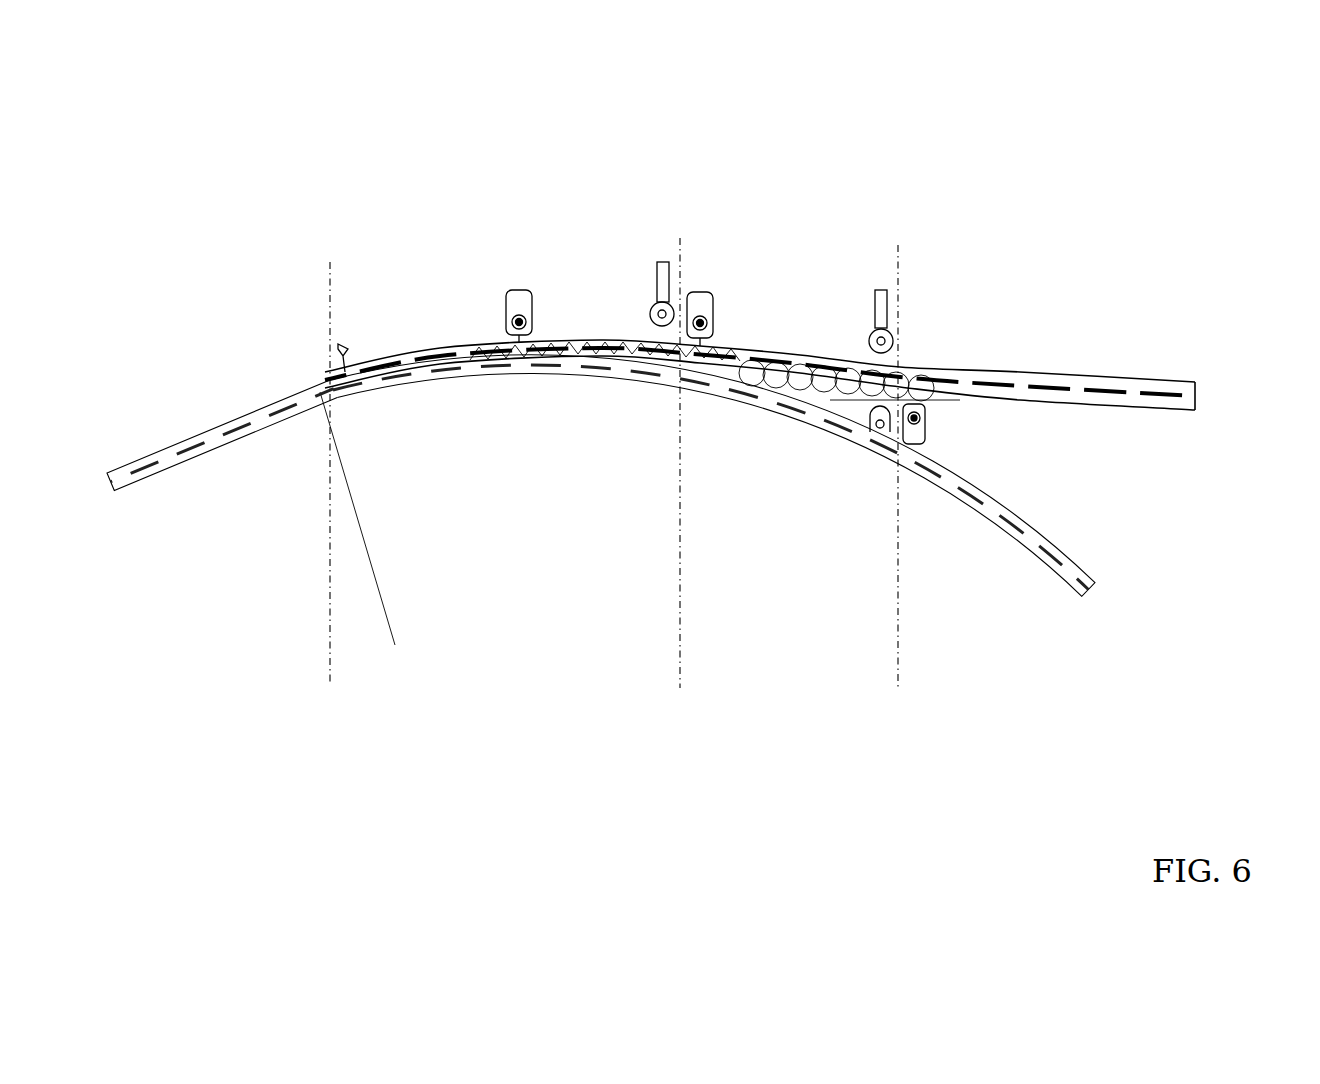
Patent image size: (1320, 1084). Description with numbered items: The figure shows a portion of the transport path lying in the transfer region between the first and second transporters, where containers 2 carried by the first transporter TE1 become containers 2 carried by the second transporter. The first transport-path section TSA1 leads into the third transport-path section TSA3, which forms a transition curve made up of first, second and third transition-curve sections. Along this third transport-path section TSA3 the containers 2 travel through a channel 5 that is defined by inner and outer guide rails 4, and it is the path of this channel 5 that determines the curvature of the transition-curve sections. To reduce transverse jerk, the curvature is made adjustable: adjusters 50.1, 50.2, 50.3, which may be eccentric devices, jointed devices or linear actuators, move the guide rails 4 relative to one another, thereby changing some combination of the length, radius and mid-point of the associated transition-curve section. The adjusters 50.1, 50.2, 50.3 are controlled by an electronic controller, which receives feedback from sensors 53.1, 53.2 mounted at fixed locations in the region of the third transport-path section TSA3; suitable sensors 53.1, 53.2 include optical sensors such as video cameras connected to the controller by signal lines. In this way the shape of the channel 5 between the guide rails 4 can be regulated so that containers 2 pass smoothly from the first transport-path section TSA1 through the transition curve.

The first transport-path section TSA1 is at (231, 386).
The third transport-path section TSA3 is at (803, 312).
The first transporter TE1 is at (221, 453).
The adjuster 50.1 is at (524, 290).
The adjuster 50.2 is at (700, 292).
The adjuster 50.3 is at (920, 433).
The sensor 53.1 is at (667, 262).
The sensor 53.2 is at (880, 290).
The container 2 is at (941, 378).
The guide rail 4 is at (1146, 371).
The channel 5 is at (1202, 393).